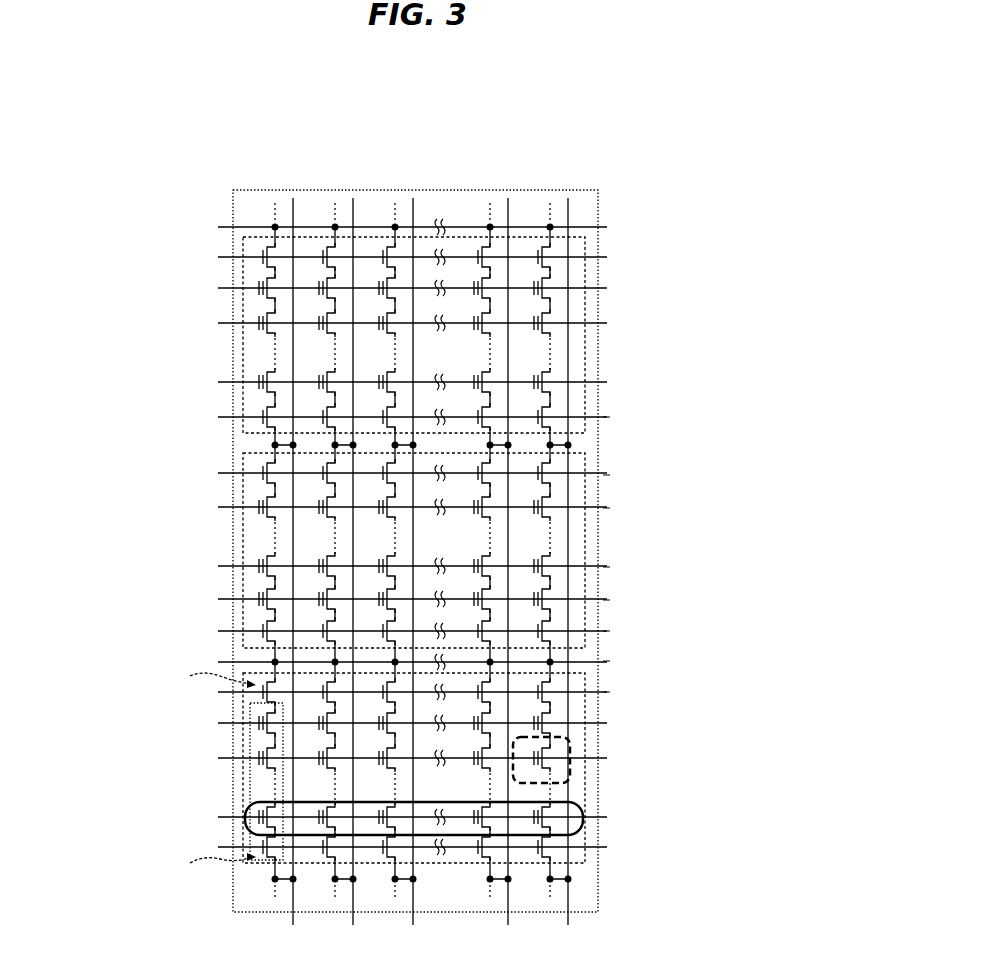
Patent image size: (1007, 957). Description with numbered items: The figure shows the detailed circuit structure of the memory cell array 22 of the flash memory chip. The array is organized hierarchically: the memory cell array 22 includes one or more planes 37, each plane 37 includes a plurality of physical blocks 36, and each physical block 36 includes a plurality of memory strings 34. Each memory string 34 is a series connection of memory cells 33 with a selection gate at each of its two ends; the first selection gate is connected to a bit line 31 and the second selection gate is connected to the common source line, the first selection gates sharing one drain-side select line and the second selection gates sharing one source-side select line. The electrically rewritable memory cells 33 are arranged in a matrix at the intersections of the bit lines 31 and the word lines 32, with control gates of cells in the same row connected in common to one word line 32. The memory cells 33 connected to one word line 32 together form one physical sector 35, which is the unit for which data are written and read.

The memory cell array 22 is at (424, 130).
The bit line 31 is at (665, 106).
The word line 32 is at (852, 552).
The memory cell 33 is at (757, 752).
The memory string 34 is at (242, 744).
The physical sector 35 is at (770, 834).
The physical block 36 is at (234, 793).
The plane 37 is at (715, 894).